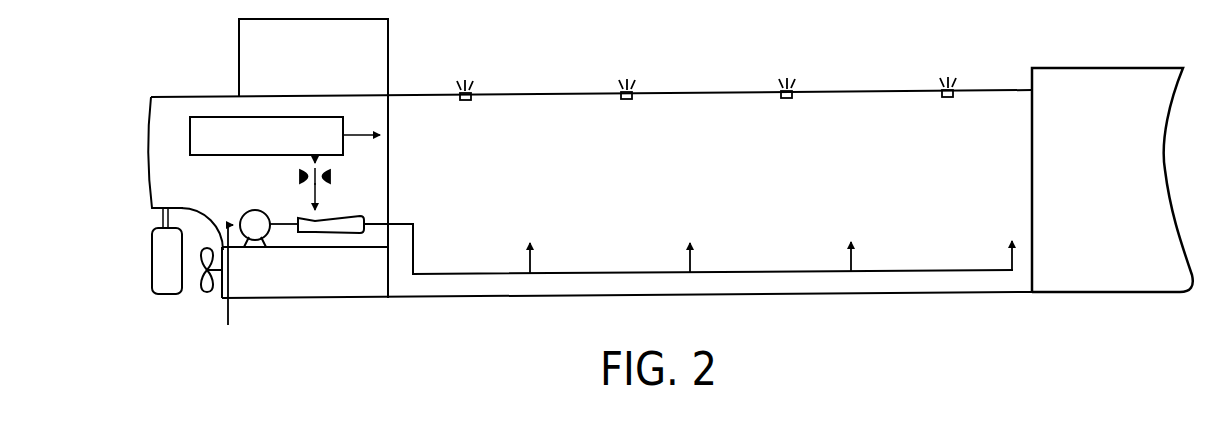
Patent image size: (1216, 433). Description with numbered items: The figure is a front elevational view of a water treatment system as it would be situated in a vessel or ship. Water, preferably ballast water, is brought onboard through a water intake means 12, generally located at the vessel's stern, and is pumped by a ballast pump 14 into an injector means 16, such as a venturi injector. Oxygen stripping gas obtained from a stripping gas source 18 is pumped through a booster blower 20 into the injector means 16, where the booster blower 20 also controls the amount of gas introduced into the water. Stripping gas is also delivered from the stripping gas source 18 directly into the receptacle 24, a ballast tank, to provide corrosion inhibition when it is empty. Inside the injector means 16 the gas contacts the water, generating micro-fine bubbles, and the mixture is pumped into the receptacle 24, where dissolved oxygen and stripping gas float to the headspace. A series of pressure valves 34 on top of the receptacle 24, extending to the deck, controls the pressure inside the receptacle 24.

The water intake means 12 is at (226, 292).
The ballast pump 14 is at (249, 212).
The injector means 16 is at (340, 236).
The stripping gas source 18 is at (293, 117).
The booster blower 20 is at (331, 177).
The receptacle 24 is at (910, 263).
The pressure valves 34 is at (634, 80).